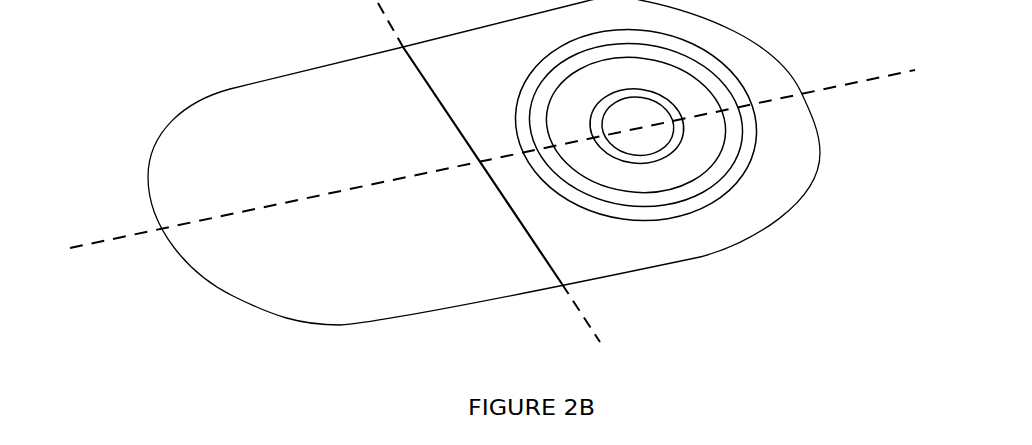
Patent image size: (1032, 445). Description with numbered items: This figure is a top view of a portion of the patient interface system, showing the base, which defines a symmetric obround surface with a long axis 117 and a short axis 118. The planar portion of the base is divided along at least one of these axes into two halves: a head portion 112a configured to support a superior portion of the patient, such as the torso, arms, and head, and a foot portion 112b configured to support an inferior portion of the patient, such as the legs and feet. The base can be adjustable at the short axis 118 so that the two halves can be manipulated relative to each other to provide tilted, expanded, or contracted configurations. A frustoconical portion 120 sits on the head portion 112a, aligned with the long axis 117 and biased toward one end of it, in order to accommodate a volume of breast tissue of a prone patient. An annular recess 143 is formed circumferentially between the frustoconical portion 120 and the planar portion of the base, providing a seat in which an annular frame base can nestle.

The head portion 112a is at (722, 228).
The foot portion 112b is at (322, 307).
The long axis 117 is at (466, 171).
The short axis 118 is at (500, 191).
The frustoconical portion 120 is at (632, 76).
The annular recess 143 is at (632, 207).